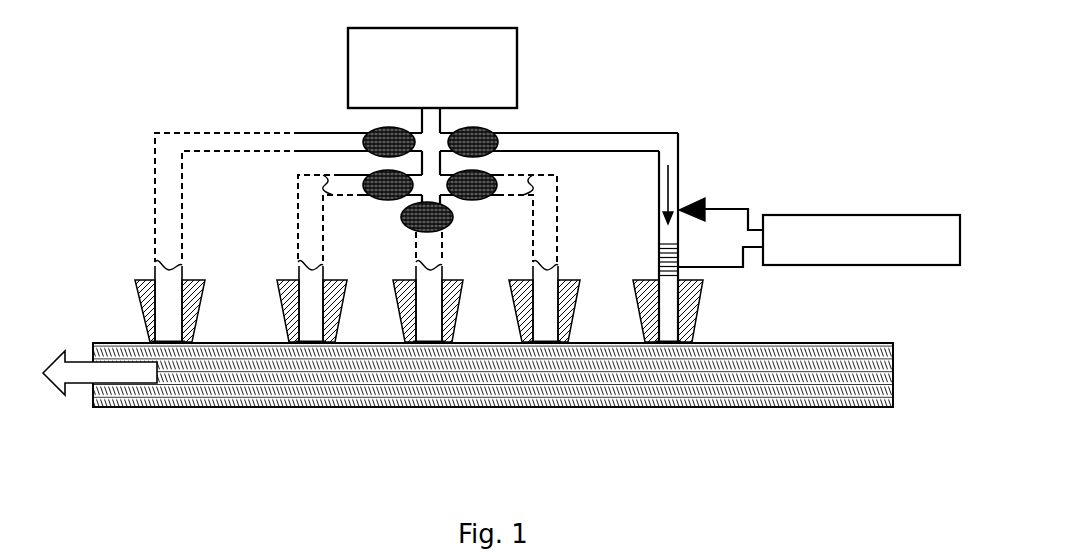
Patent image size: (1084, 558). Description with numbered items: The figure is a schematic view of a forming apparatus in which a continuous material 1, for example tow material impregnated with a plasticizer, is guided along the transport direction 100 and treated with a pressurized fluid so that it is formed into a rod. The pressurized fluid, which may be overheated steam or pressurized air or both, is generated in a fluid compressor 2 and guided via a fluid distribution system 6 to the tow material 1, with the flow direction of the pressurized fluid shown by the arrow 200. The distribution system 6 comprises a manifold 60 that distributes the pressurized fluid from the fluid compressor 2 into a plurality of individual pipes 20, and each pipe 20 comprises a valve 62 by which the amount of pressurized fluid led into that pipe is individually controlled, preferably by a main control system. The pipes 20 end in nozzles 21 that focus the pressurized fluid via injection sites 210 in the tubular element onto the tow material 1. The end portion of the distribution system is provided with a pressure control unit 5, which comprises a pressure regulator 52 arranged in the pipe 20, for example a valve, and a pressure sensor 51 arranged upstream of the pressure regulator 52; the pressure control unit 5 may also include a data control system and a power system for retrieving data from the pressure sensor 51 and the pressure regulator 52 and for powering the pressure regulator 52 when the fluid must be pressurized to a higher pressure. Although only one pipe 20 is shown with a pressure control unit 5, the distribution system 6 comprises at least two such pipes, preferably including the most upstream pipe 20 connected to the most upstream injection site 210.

The continuous material 1 is at (337, 375).
The transport direction 100 is at (142, 372).
The fluid compressor 2 is at (470, 38).
The fluid distribution system 6 is at (443, 234).
The manifold 60 is at (428, 173).
The valve 62 is at (365, 183).
The pipe 20 is at (170, 148).
The arrow 200 is at (668, 150).
The nozzle 21 is at (140, 280).
The injection site 210 is at (542, 343).
The pressure sensor 51 is at (705, 200).
The pressure regulator 52 is at (665, 262).
The pressure control unit 5 is at (847, 245).